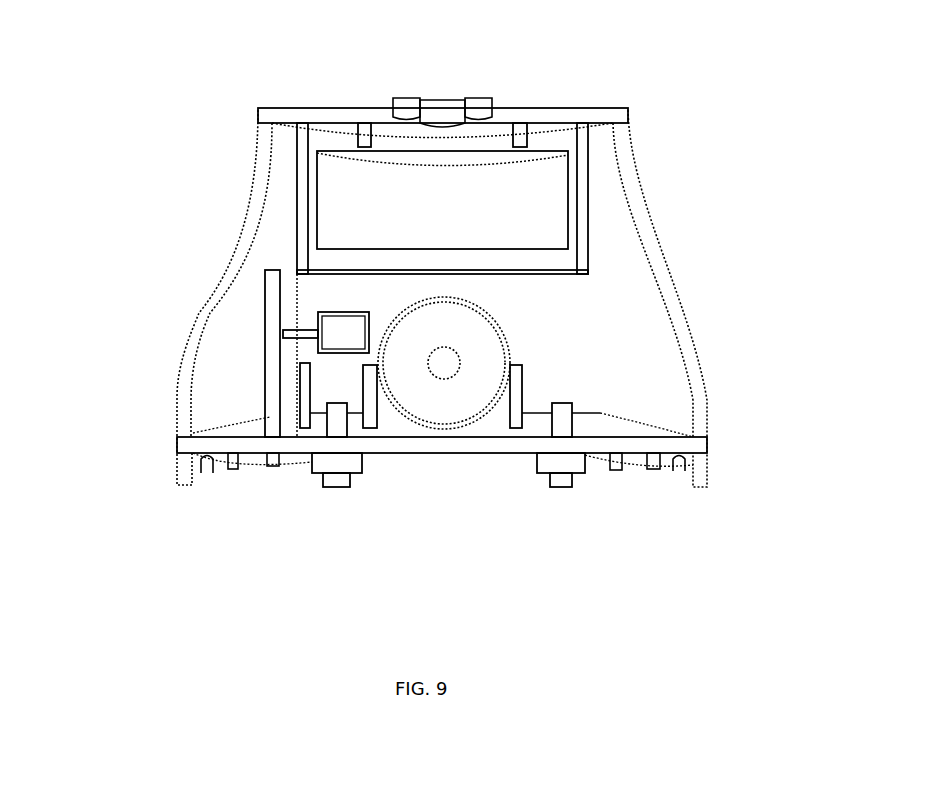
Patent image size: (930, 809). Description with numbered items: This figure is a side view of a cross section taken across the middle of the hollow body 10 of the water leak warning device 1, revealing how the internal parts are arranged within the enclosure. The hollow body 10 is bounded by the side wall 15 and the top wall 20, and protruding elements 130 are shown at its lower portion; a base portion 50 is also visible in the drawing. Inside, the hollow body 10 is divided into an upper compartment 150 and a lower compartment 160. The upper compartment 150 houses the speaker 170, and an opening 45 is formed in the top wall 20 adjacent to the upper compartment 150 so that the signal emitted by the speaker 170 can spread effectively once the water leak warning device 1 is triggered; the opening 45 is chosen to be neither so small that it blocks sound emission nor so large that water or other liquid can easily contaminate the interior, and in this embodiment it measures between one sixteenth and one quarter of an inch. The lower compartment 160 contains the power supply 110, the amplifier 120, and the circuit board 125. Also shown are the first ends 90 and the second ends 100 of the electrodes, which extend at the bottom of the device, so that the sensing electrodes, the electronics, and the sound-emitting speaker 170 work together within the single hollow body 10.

The water leak warning device 1 is at (167, 132).
The hollow body 10 is at (419, 260).
The side wall 15 is at (227, 256).
The top wall 20 is at (567, 117).
The opening 45 is at (420, 103).
The base plate 50 is at (433, 445).
The first ends 90 is at (343, 487).
The second ends 100 is at (337, 412).
The power supply 110 is at (453, 337).
The amplifier 120 is at (335, 332).
The circuit board 125 is at (270, 420).
The protruding elements 130 is at (187, 473).
The upper compartment 150 is at (433, 261).
The lower compartment 160 is at (600, 360).
The speaker 170 is at (453, 214).